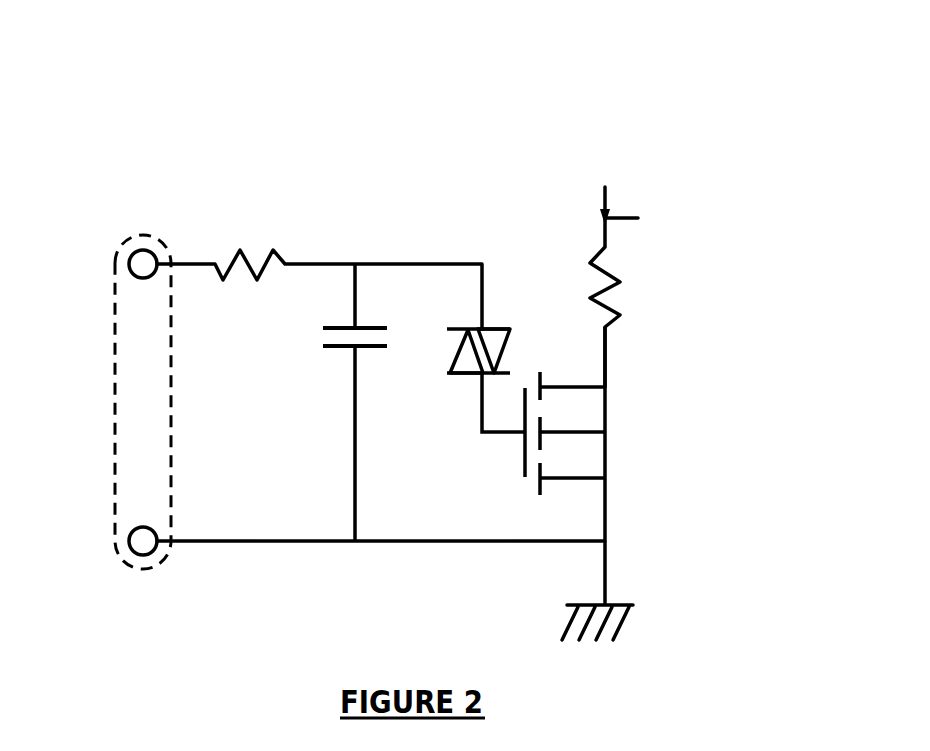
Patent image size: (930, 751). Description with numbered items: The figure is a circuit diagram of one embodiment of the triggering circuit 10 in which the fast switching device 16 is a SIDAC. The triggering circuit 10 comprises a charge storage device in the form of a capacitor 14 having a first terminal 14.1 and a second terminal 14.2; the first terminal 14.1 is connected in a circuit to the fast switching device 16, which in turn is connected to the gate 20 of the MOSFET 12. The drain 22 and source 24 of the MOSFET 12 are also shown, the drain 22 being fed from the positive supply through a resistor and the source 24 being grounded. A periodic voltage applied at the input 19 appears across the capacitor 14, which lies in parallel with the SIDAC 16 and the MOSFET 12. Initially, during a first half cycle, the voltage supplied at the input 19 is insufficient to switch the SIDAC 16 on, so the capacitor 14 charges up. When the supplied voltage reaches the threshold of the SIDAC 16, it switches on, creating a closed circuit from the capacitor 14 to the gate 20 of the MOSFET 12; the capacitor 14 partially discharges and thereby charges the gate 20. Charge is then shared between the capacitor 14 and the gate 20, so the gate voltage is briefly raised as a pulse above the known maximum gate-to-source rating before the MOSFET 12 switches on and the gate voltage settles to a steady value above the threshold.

The triggering circuit 10 is at (502, 115).
The input 19 is at (117, 283).
The capacitor 14 is at (304, 402).
The first terminal 14.1 is at (356, 327).
The second terminal 14.2 is at (355, 347).
The fast switching device 16 is at (498, 352).
The gate 20 is at (527, 436).
The MOSFET 12 is at (610, 413).
The drain 22 is at (606, 344).
The source 24 is at (605, 516).